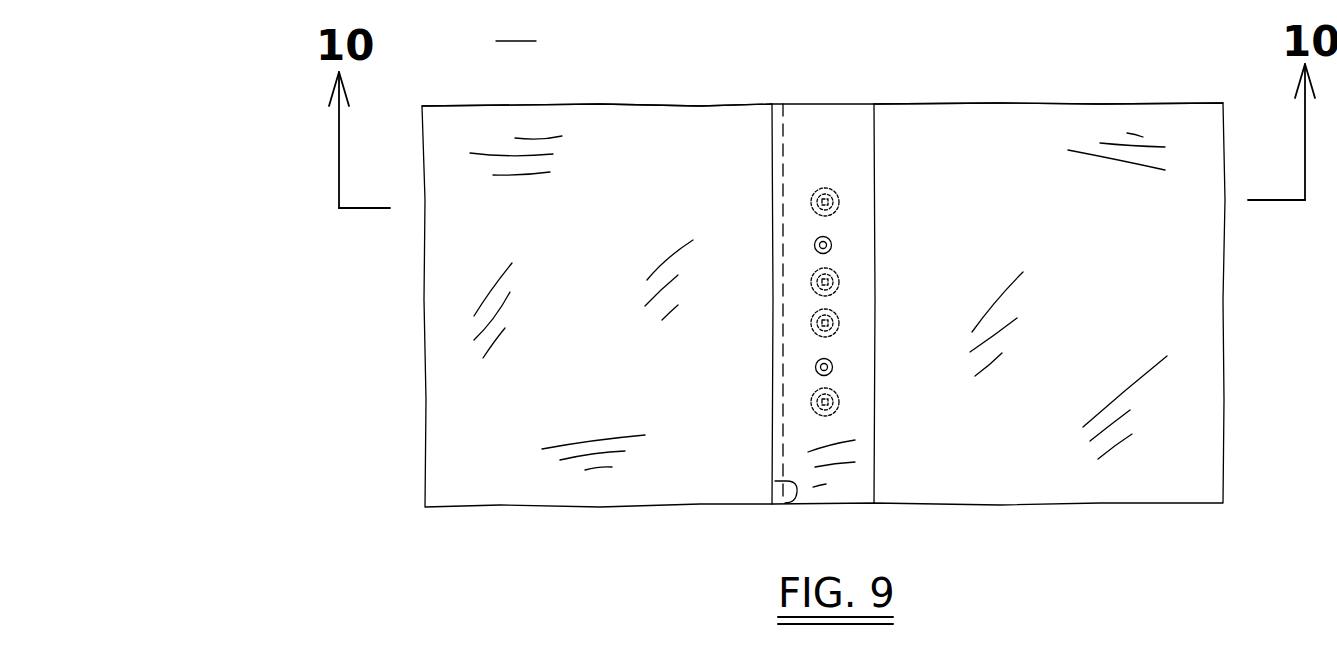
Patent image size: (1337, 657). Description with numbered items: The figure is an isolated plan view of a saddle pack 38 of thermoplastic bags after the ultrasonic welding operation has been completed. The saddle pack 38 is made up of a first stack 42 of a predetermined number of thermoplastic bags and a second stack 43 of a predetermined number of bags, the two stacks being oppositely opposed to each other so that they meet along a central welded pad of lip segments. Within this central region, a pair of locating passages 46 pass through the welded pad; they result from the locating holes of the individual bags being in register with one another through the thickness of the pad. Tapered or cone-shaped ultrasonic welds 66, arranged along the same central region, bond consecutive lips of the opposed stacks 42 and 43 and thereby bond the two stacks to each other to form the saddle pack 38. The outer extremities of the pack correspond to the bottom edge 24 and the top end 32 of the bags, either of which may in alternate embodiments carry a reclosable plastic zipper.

The bottom edge 24 is at (438, 355).
The top end 32 is at (778, 504).
The saddle pack 38 is at (486, 333).
The first stack 42 is at (1050, 104).
The second stack 43 is at (610, 107).
The locating passages 46 is at (814, 243).
The ultrasonic welds 66 is at (840, 280).